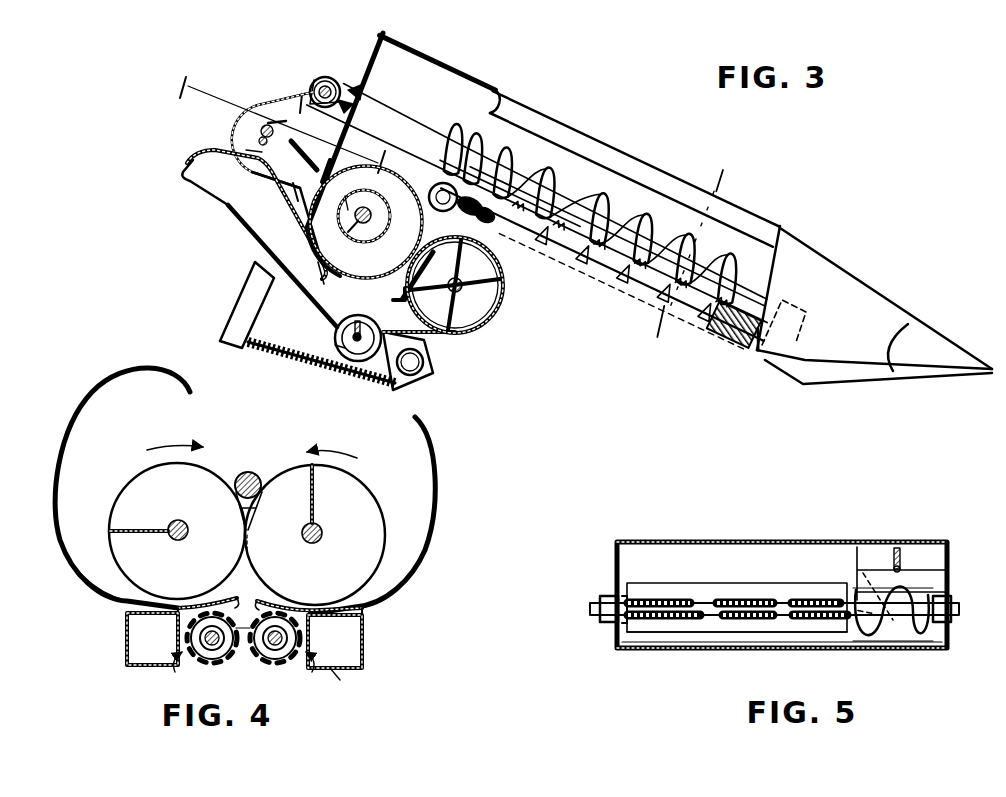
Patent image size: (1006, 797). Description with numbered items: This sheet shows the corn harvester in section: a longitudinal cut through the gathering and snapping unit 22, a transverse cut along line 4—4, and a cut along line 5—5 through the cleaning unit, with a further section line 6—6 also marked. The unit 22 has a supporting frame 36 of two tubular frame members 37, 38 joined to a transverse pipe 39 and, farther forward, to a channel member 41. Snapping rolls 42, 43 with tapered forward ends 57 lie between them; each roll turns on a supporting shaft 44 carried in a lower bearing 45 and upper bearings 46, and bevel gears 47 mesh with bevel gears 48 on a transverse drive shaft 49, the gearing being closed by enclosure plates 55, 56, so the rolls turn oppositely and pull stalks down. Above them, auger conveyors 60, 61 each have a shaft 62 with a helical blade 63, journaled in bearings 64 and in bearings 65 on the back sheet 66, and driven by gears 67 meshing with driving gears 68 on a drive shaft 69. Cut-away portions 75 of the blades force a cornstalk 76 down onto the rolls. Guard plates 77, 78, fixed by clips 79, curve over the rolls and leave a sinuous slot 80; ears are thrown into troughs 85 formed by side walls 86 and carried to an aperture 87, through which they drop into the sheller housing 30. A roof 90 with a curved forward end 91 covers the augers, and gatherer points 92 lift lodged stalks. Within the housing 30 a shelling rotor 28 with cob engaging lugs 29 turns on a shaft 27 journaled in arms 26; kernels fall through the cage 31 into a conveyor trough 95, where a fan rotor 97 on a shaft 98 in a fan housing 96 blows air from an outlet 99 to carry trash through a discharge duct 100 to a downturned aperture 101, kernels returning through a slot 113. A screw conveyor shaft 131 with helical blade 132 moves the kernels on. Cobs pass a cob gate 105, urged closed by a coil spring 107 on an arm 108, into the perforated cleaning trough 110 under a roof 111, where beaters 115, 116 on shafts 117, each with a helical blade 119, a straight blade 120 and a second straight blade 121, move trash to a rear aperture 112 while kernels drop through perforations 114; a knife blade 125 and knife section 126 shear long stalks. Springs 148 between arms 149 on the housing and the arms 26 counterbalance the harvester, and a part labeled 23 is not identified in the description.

In FIG. 3, the line 4— 4 is at (689, 253).
In FIG. 3, the line 5— 5 is at (289, 146).
In FIG. 3, the section line 6- 6 is at (271, 126).
In FIG. 3, the gathering and snapping unit 22 is at (806, 221).
In FIG. 3, the bracket 23 is at (434, 379).
In FIG. 3, the arms 26 is at (424, 357).
In FIG. 3, the transversely disposed shaft 27 is at (354, 236).
In FIG. 3, the shelling rotor 28 is at (380, 234).
In FIG. 3, the cob engaging lugs 29 is at (347, 207).
In FIG. 3, the cylindrical sheller housing 30 is at (413, 194).
In FIG. 3, the screen or cage 31 is at (360, 278).
In FIG. 4, the supporting frame 36 is at (368, 648).
In FIG. 4, the tubular frame member 37 is at (128, 658).
In FIG. 3, the tubular frame member 38 is at (778, 362).
In FIG. 4, the tubular frame member 38 is at (335, 669).
In FIG. 3, the main transverse beam member 39 is at (441, 182).
In FIG. 3, the structural channel member 41 is at (492, 248).
In FIG. 4, the snapping roll 42 is at (202, 656).
In FIG. 3, the snapping roll 43 is at (603, 262).
In FIG. 4, the snapping roll 43 is at (284, 656).
In FIG. 3, the supporting shaft 44 is at (544, 197).
In FIG. 4, the supporting shaft 44 is at (241, 655).
In FIG. 3, the bearing 45 is at (734, 324).
In FIG. 3, the bearings 46 is at (564, 201).
In FIG. 3, the bevel gears 47 is at (475, 159).
In FIG. 3, the cooperative bevel gears 48 is at (456, 150).
In FIG. 3, the transverse drive shaft 49 is at (445, 276).
In FIG. 3, the upper enclosure plate 55 is at (515, 178).
In FIG. 3, the lower enclosure plate 56 is at (500, 281).
In FIG. 3, the forward ends of the snapping rolls 57 is at (758, 339).
In FIG. 4, the auger conveyor 60 is at (118, 482).
In FIG. 3, the auger conveyor 61 is at (775, 263).
In FIG. 4, the auger conveyor 61 is at (382, 502).
In FIG. 3, the shafts 62 is at (655, 244).
In FIG. 4, the shafts 62 is at (185, 534).
In FIG. 3, the helical blade 63 is at (612, 224).
In FIG. 4, the helical blade 63 is at (146, 527).
In FIG. 3, the journal bearings 64 is at (802, 302).
In FIG. 3, the journal bearings 65 is at (364, 96).
In FIG. 3, the back sheet 66 is at (374, 64).
In FIG. 3, the beveled gears 67 is at (336, 80).
In FIG. 3, the bevel driving gears 68 is at (321, 76).
In FIG. 3, the transverse drive shaft 69 is at (311, 82).
In FIG. 3, the cut-away portions 75 is at (729, 279).
In FIG. 4, the cut-away portions 75 is at (243, 509).
In FIG. 4, the cornstalk 76 is at (250, 471).
In FIG. 4, the guard plate 77 is at (210, 603).
In FIG. 4, the guard plate 78 is at (290, 601).
In FIG. 4, the clips 79 is at (183, 605).
In FIG. 3, the slot 80 is at (697, 264).
In FIG. 4, the slot 80 is at (245, 592).
In FIG. 4, the troughs 85 is at (88, 571).
In FIG. 4, the side walls 86 is at (104, 386).
In FIG. 3, the aperture 87 is at (345, 138).
In FIG. 3, the roof 90 is at (437, 75).
In FIG. 3, the downwardly curved forward end 91 is at (633, 169).
In FIG. 3, the gatherer point 92 is at (897, 318).
In FIG. 3, the conveyor trough 95 is at (336, 347).
In FIG. 3, the fan housing 96 is at (498, 308).
In FIG. 3, the fan rotor 97 is at (462, 295).
In FIG. 3, the shaft 98 is at (463, 284).
In FIG. 3, the discharge outlet 99 is at (412, 322).
In FIG. 3, the discharge duct 100 is at (292, 233).
In FIG. 3, the discharge aperture 101 is at (188, 178).
In FIG. 5, the cob gate 105 is at (920, 578).
In FIG. 5, the coil spring 107 is at (899, 550).
In FIG. 5, the arm 108 is at (889, 561).
In FIG. 3, the perforated cleaning trough 110 is at (262, 171).
In FIG. 5, the perforated cleaning trough 110 is at (718, 651).
In FIG. 3, the roof 111 is at (256, 112).
In FIG. 5, the roof 111 is at (722, 546).
In FIG. 3, the aperture 112 is at (248, 150).
In FIG. 3, the slot 113 is at (320, 274).
In FIG. 5, the perforations 114 is at (872, 656).
In FIG. 3, the beater 115 is at (308, 120).
In FIG. 5, the beater 115 is at (655, 636).
In FIG. 3, the beater 116 is at (263, 112).
In FIG. 3, the supporting shaft 117 is at (261, 131).
In FIG. 5, the supporting shaft 117 is at (778, 598).
In FIG. 5, the helical blade 119 is at (900, 632).
In FIG. 3, the straight blade 120 is at (258, 118).
In FIG. 5, the straight blade 120 is at (767, 634).
In FIG. 3, the second straight blade 121 is at (232, 128).
In FIG. 5, the second straight blade 121 is at (720, 587).
In FIG. 5, the knife blade 125 is at (872, 598).
In FIG. 5, the knife blade section 126 is at (856, 566).
In FIG. 3, the shaft 131 is at (335, 333).
In FIG. 3, the helical blade 132 is at (351, 324).
In FIG. 3, the springs 148 is at (320, 366).
In FIG. 3, the arms 149 is at (254, 300).